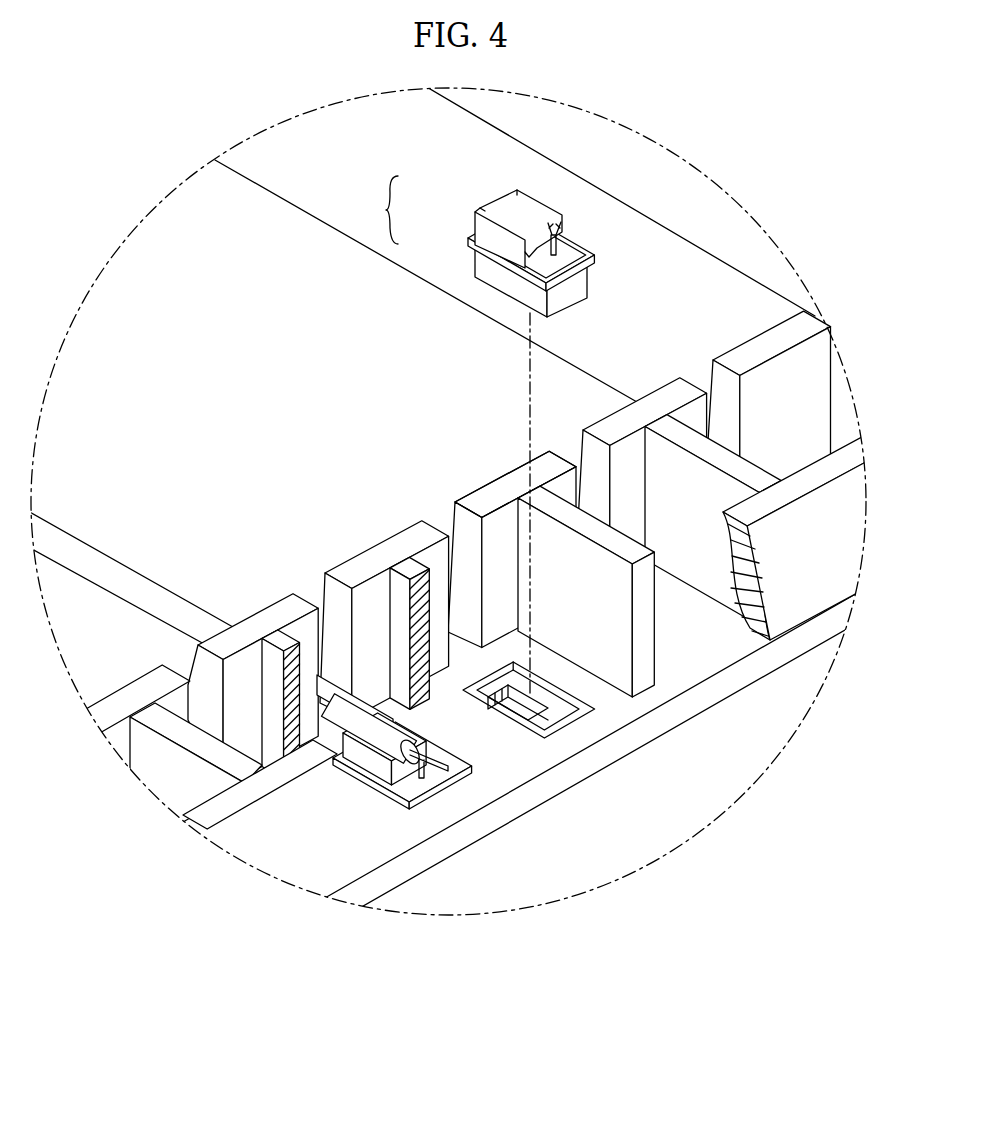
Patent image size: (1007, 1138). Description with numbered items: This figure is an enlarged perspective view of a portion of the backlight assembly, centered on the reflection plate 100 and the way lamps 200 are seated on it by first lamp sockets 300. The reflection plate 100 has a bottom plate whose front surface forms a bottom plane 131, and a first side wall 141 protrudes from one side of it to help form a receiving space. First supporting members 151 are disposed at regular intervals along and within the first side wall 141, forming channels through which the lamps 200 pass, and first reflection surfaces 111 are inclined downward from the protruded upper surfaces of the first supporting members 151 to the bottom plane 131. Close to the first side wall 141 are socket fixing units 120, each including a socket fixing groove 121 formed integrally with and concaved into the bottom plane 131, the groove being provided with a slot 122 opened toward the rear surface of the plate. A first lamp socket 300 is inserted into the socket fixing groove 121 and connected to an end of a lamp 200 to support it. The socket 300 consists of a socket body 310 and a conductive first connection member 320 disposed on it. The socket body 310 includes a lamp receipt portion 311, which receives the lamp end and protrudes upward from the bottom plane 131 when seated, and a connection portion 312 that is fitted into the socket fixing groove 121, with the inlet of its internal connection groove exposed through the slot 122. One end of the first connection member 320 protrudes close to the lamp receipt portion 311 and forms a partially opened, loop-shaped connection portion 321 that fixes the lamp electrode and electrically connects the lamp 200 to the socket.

The reflection plate 100 is at (553, 808).
The first reflection surface 111 is at (452, 518).
The socket fixing unit 120 is at (576, 742).
The socket fixing groove 121 is at (536, 714).
The slot 122 is at (489, 709).
The bottom plane 131 is at (152, 328).
The first side wall 141 is at (802, 592).
The first supporting member 151 is at (508, 484).
The lamp 200 is at (115, 566).
The first lamp socket 300 is at (488, 493).
The socket body 310 is at (375, 210).
The lamp receipt portion 311 is at (496, 204).
The connection portion 312 is at (483, 263).
The first connection member 320 is at (572, 256).
The connection portion 321 is at (563, 232).